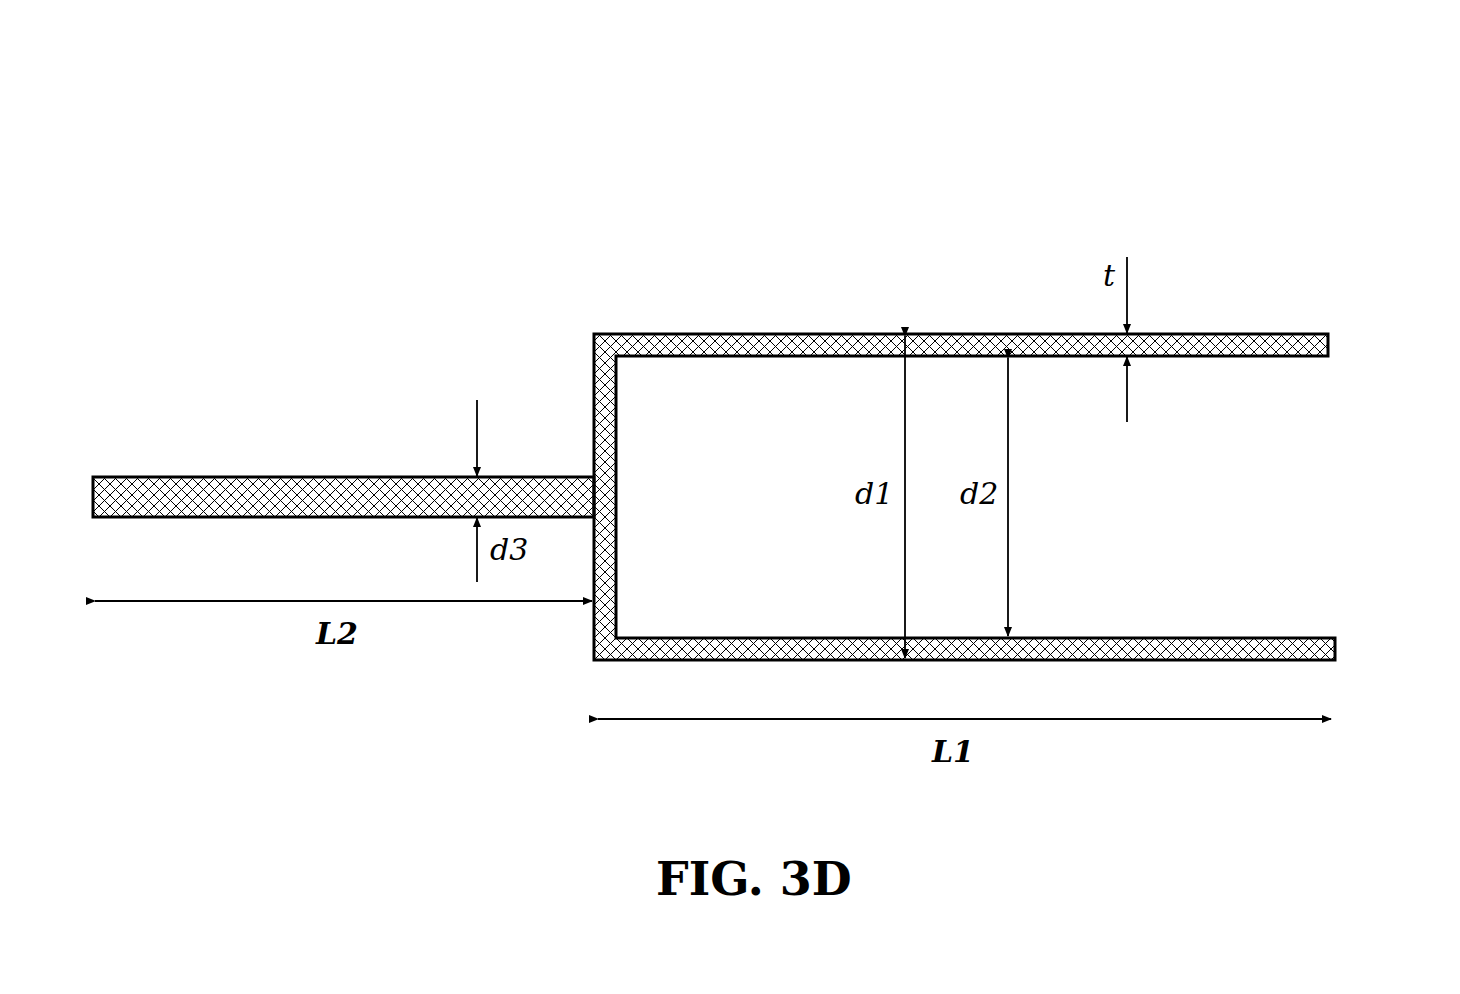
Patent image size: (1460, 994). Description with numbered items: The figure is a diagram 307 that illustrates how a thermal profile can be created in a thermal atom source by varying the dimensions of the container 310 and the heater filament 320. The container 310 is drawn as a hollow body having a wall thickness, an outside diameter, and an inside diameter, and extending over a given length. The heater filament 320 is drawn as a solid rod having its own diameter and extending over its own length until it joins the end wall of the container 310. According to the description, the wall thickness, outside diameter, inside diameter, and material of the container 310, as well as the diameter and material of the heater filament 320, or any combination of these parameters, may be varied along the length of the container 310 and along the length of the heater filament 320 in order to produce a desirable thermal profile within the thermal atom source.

The diagram 307 is at (1322, 94).
The container 310 is at (1215, 334).
The heater filament 320 is at (357, 477).